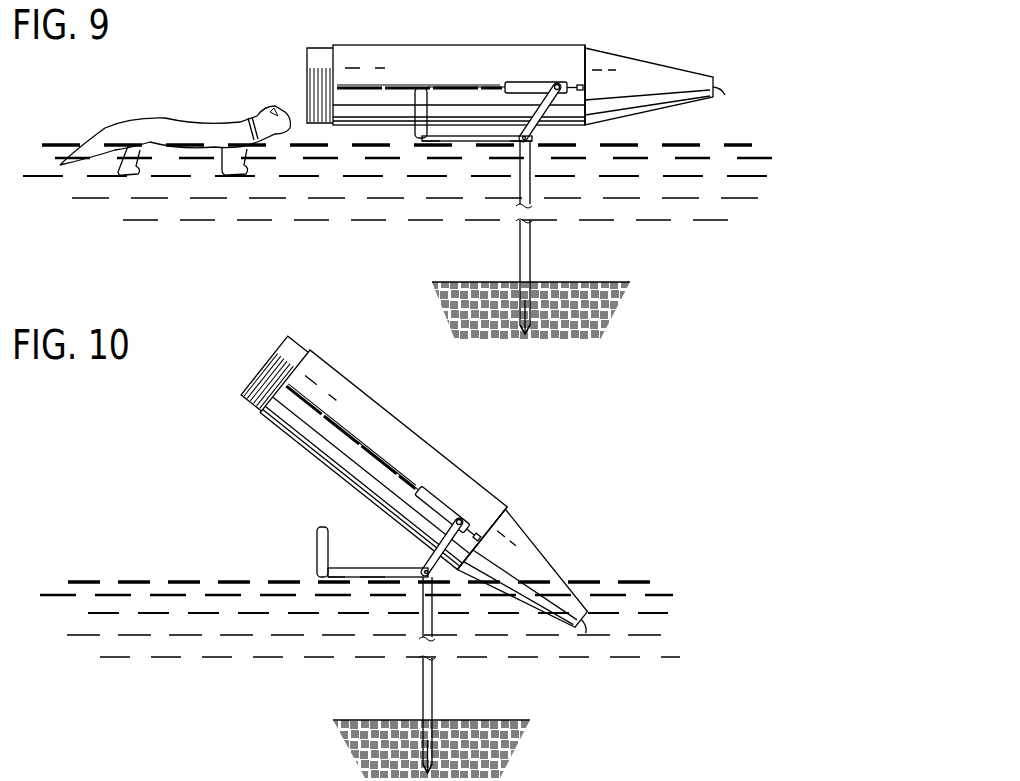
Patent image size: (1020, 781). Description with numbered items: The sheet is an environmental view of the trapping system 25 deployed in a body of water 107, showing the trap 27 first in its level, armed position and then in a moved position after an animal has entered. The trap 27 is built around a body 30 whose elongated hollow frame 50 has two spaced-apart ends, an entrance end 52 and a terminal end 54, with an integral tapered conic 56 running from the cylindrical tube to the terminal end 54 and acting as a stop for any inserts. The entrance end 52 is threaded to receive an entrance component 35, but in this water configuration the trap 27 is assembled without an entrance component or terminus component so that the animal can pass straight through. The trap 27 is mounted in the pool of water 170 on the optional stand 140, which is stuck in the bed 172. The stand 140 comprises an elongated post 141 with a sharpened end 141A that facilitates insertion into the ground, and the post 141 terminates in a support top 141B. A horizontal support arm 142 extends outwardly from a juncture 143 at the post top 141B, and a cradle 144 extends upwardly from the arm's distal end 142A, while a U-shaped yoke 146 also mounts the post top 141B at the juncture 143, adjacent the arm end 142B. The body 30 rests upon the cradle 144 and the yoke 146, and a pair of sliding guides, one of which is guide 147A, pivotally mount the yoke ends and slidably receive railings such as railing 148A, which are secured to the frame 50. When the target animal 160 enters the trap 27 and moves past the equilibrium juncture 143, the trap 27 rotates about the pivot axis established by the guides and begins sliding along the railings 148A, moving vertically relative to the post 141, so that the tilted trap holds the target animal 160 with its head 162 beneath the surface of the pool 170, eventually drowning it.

In FIG. 10, the trap system 25 is at (382, 519).
In FIG. 9, the trap 27 is at (504, 62).
In FIG. 10, the trap 27 is at (433, 499).
In FIG. 9, the body 30 is at (627, 42).
In FIG. 10, the body 30 is at (442, 427).
In FIG. 9, the entrance component 35 is at (492, 68).
In FIG. 9, the frame 50 is at (537, 35).
In FIG. 10, the frame 50 is at (318, 452).
In FIG. 9, the entrance end 52 is at (312, 72).
In FIG. 10, the entrance end 52 is at (258, 402).
In FIG. 9, the terminal end 54 is at (720, 88).
In FIG. 10, the terminal end 54 is at (592, 622).
In FIG. 9, the tapered conic 56 is at (510, 55).
In FIG. 10, the water 107 is at (130, 648).
In FIG. 9, the stand 140 is at (592, 263).
In FIG. 9, the post 141 is at (576, 237).
In FIG. 10, the post 141 is at (421, 675).
In FIG. 9, the sharpened end 141A is at (522, 316).
In FIG. 10, the sharpened end 141A is at (430, 768).
In FIG. 9, the support top 141B is at (532, 142).
In FIG. 10, the support top 141B is at (422, 585).
In FIG. 9, the horizontal support arm 142 is at (458, 136).
In FIG. 10, the horizontal support arm 142 is at (365, 567).
In FIG. 9, the arm distal end 142A is at (427, 143).
In FIG. 10, the arm distal end 142A is at (333, 578).
In FIG. 9, the arm end 142B is at (513, 140).
In FIG. 10, the arm end 142B is at (377, 582).
In FIG. 9, the juncture 143 is at (500, 122).
In FIG. 10, the juncture 143 is at (452, 575).
In FIG. 9, the cradle 144 is at (418, 105).
In FIG. 10, the cradle 144 is at (318, 553).
In FIG. 9, the U-shaped yoke 146 is at (545, 108).
In FIG. 10, the U-shaped yoke 146 is at (510, 565).
In FIG. 9, the sliding guide 147A is at (535, 80).
In FIG. 10, the sliding guide 147A is at (438, 492).
In FIG. 9, the railing 148A is at (428, 87).
In FIG. 10, the railing 148A is at (417, 478).
In FIG. 9, the target animal 160 is at (125, 112).
In FIG. 9, the target animal's head 162 is at (262, 122).
In FIG. 9, the pool of water 170 is at (268, 235).
In FIG. 9, the bed 172 is at (596, 305).
In FIG. 10, the bed 172 is at (520, 737).